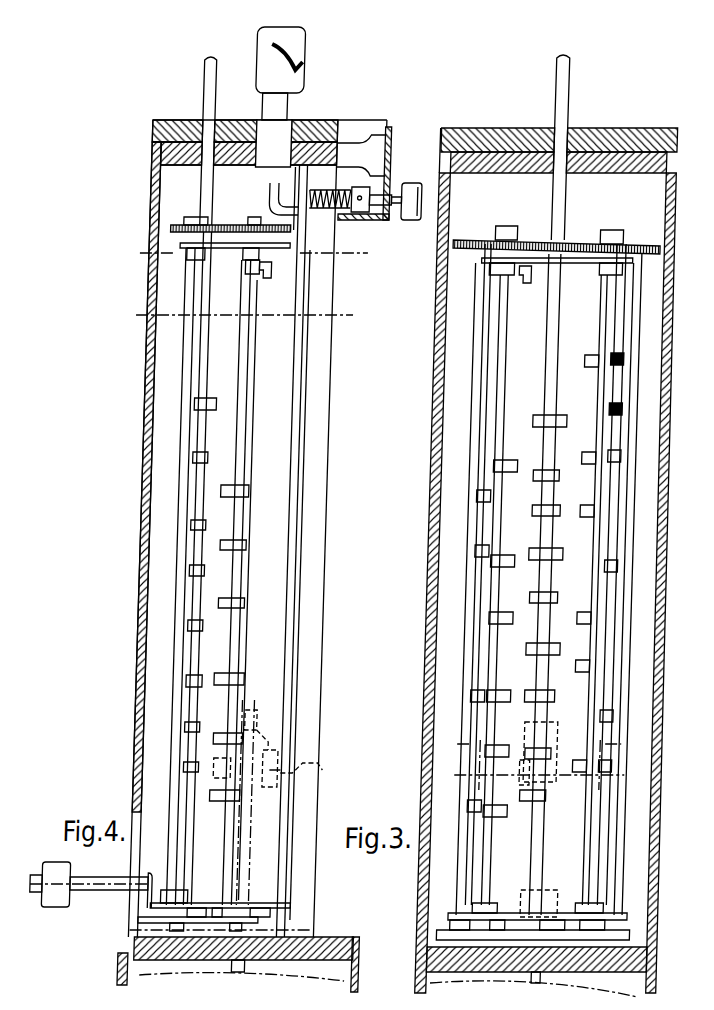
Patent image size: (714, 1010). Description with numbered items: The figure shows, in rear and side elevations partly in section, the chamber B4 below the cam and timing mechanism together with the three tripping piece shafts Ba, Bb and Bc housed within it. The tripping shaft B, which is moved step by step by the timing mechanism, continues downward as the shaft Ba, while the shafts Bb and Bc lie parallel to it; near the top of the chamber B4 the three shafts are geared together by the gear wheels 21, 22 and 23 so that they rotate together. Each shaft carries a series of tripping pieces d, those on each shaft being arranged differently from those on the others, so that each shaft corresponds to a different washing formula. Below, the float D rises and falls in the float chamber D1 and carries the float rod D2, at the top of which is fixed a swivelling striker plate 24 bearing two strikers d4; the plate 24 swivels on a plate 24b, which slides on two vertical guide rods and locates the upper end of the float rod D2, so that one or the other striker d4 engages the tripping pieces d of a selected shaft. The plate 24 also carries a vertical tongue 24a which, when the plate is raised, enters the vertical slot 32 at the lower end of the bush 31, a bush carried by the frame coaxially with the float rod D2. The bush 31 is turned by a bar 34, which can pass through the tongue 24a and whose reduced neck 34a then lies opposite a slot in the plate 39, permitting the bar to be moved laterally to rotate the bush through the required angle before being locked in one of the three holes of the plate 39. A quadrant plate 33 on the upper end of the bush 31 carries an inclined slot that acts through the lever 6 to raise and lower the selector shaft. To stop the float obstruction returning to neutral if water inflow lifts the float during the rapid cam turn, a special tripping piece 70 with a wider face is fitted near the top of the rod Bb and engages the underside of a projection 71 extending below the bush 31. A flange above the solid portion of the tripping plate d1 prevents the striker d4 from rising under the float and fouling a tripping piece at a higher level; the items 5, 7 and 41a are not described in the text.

In FIG. 4, the tripping shaft B is at (211, 90).
In FIG. 3, the tripping shaft B is at (563, 110).
In FIG. 4, the tripping piece shaft Ba is at (206, 196).
In FIG. 3, the tripping piece shaft Ba is at (563, 197).
In FIG. 3, the tripping piece shaft Bb is at (494, 406).
In FIG. 4, the tripping piece shaft Bc is at (253, 400).
In FIG. 3, the tripping piece shaft Bc is at (620, 320).
In FIG. 4, the chamber B4 is at (167, 441).
In FIG. 3, the chamber B4 is at (535, 560).
In FIG. 4, the tripping piece d is at (214, 399).
In FIG. 3, the tripping piece d is at (540, 414).
In FIG. 4, the tripping plate d1 is at (309, 912).
In FIG. 3, the tripping plate d1 is at (459, 926).
In FIG. 4, the striker d4 is at (229, 780).
In FIG. 4, the float D is at (139, 965).
In FIG. 4, the float chamber D1 is at (257, 935).
In FIG. 3, the float chamber D1 is at (521, 967).
In FIG. 4, the float rod D2 is at (263, 845).
In FIG. 4, the section line 5- 5 is at (251, 317).
In FIG. 4, the lever 6 is at (168, 928).
In FIG. 4, the section line 7- 7 is at (255, 253).
In FIG. 4, the gear wheel 21 is at (259, 253).
In FIG. 4, the gear wheel 22 is at (170, 225).
In FIG. 3, the gear wheel 22 is at (534, 240).
In FIG. 3, the gear wheel 23 is at (645, 243).
In FIG. 4, the swivelling striker plate 24 is at (266, 765).
In FIG. 3, the swivelling striker plate 24 is at (550, 773).
In FIG. 4, the vertical tongue 24a is at (269, 708).
In FIG. 3, the vertical tongue 24a is at (566, 766).
In FIG. 4, the plate 24b is at (336, 775).
In FIG. 4, the bush 31 is at (273, 130).
In FIG. 4, the vertical slot 32 is at (300, 210).
In FIG. 4, the quadrant plate 33 is at (294, 48).
In FIG. 4, the bar 34 is at (291, 72).
In FIG. 4, the neck 34a is at (405, 182).
In FIG. 4, the plate 39 is at (385, 126).
In FIG. 4, the spring 41a is at (331, 208).
In FIG. 4, the special tripping piece 70 is at (263, 279).
In FIG. 3, the special tripping piece 70 is at (516, 284).
In FIG. 4, the projection 71 is at (242, 269).